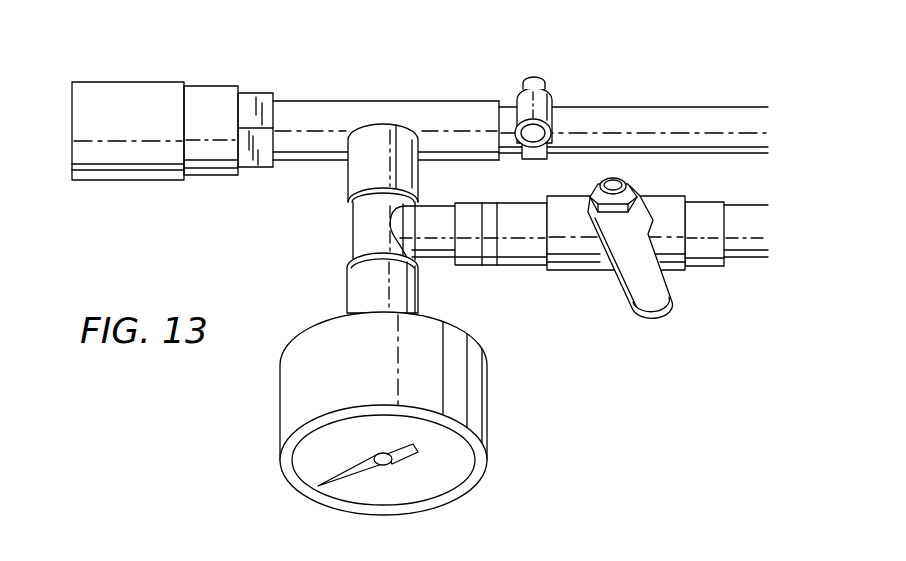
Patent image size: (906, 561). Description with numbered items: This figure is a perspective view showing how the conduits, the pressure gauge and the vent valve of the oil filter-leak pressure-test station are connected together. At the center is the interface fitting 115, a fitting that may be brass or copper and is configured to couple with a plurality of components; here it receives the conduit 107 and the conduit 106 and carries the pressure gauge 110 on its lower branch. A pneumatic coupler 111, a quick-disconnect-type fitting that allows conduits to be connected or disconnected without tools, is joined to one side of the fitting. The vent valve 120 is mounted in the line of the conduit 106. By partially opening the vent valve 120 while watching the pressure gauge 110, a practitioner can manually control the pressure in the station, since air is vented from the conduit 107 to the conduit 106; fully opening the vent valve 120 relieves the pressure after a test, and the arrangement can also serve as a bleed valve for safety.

The pneumatic coupler 111 is at (122, 100).
The interface fitting 115 is at (337, 112).
The conduit 107 is at (589, 107).
The conduit 106 is at (745, 240).
The vent valve 120 is at (575, 248).
The pressure gauge 110 is at (300, 406).